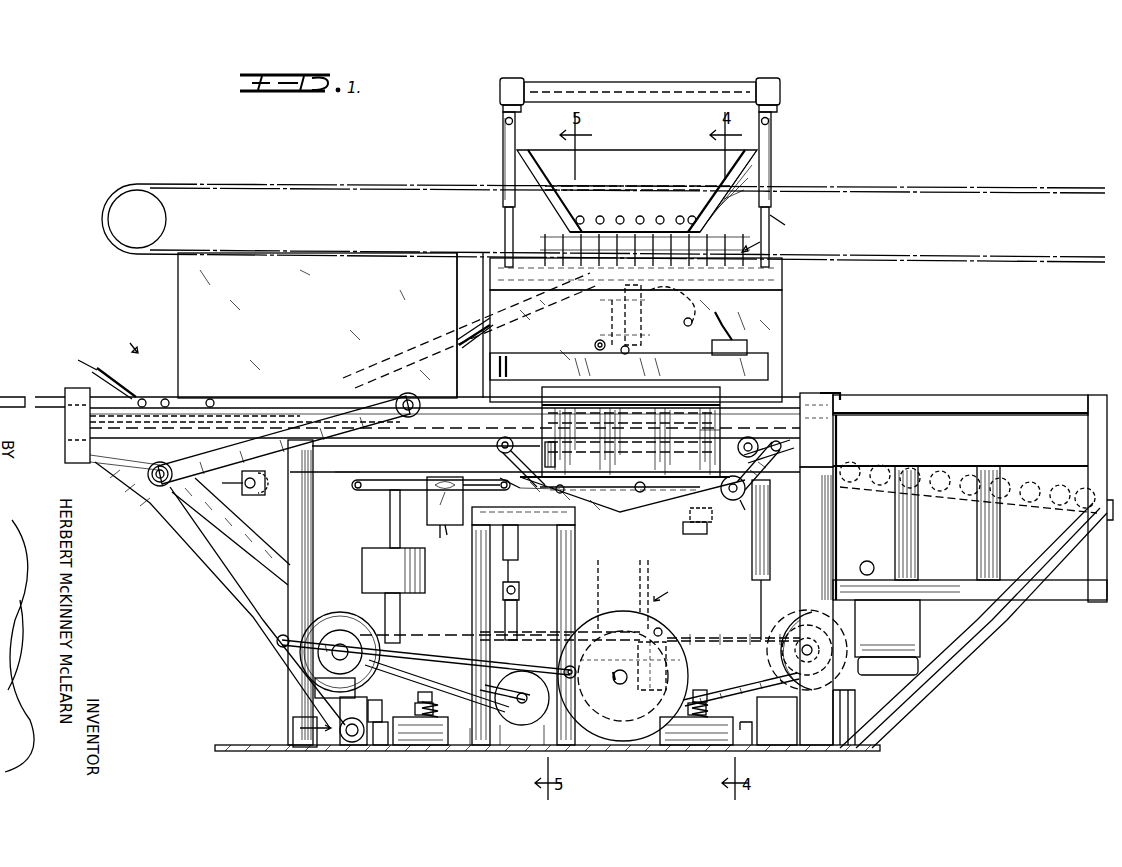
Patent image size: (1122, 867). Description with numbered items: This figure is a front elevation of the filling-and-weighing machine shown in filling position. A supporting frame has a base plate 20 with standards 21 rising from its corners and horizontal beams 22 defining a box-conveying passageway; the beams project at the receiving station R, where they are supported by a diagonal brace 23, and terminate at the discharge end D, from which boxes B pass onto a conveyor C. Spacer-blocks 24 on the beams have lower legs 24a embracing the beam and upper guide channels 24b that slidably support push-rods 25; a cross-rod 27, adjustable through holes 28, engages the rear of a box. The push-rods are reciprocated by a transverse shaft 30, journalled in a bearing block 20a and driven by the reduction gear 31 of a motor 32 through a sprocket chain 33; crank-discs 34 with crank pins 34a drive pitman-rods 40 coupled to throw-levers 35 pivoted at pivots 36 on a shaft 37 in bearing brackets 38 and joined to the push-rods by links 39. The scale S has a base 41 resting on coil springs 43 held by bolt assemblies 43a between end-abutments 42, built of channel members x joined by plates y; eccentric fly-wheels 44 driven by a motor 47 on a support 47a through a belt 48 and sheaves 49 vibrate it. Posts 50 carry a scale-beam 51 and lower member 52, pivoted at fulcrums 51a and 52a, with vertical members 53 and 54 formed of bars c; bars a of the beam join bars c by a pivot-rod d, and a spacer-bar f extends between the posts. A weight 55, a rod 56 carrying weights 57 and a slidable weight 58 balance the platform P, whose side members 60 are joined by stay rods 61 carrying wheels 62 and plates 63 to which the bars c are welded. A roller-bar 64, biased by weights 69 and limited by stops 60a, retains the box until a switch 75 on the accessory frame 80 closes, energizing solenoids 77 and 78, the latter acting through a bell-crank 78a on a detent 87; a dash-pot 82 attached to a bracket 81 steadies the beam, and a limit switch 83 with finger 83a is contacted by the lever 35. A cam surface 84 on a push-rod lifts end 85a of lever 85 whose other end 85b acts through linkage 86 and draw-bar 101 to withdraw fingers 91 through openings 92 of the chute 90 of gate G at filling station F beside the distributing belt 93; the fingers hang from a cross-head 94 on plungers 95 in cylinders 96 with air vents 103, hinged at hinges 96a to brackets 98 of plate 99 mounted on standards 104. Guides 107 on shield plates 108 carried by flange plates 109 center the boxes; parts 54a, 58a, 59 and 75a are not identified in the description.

The base plate 20 is at (330, 751).
The bearing block 20a is at (668, 745).
The standards 21 is at (290, 515).
The horizontal beams 22 is at (425, 472).
The diagonal brace member 23 is at (137, 503).
The spacer-block 24 is at (65, 412).
The lower walls or legs 24a is at (92, 440).
The guide channel 24b is at (72, 392).
The push-rods 25 is at (152, 397).
The cross-rod 27 is at (166, 399).
The holes 28 is at (142, 399).
The shaft 30 is at (627, 674).
The reduction gear assembly 31 is at (795, 640).
The motor 32 is at (887, 637).
The sprocket chain 33 is at (735, 690).
The crank-disc 34 is at (680, 668).
The crank pins 34a is at (590, 670).
The throw-lever 35 is at (250, 615).
The pivot 36 is at (366, 745).
The shaft 37 is at (352, 742).
The bearing brackets 38 is at (380, 712).
The pivoted link 39 is at (214, 477).
The pitman-rod 40 is at (436, 657).
The scale base 41 is at (450, 745).
The end-abutments 42 is at (385, 745).
The coil compression springs 43 is at (428, 718).
The hold-down bolt-nut assembly 43a is at (410, 680).
The eccentric fly-wheels 44 is at (524, 725).
The motor 47 is at (332, 612).
The motor support 47a is at (315, 686).
The belt 48 is at (480, 702).
The sheaves 49 is at (495, 690).
The posts 50 is at (575, 590).
The scale-beam 51 is at (460, 478).
The fulcrum 51a is at (561, 493).
The lower horizontal member 52 is at (528, 632).
The pivot 52a is at (565, 628).
The vertical member 53 is at (390, 530).
The vertical stabilizing member 54 is at (635, 600).
The pin 54a is at (660, 628).
The weight 55 is at (362, 558).
The horizontal rod 56 is at (250, 490).
The additional weights 57 is at (236, 489).
The slidable weight 58 is at (437, 537).
The housing 58a is at (445, 501).
The rod 59 is at (375, 480).
The side members 60 is at (502, 470).
The stops 60a is at (780, 488).
The stay rods 61 is at (548, 456).
The wheels 62 is at (508, 438).
The horizontal plate 63 is at (646, 487).
The roller-bar 64 is at (816, 430).
The weight member 69 is at (744, 513).
The electric switch 75 is at (710, 507).
The stop 75a is at (693, 534).
The solenoid 77 is at (688, 640).
The solenoid 78 is at (780, 326).
The bell-crank lever 78a is at (725, 318).
The accessory supporting frame 80 is at (478, 530).
The bracket 81 is at (516, 590).
The dash-pot 82 is at (518, 547).
The limit switch 83 is at (300, 735).
The actuating finger 83a is at (300, 712).
The inclined cam surface 84 is at (105, 368).
The lever 85 is at (470, 330).
The free end 85a is at (365, 371).
The other end 85b is at (598, 340).
The bell-crank lever 86 is at (622, 345).
The spring-pressed detent 87 is at (690, 300).
The chute 90 is at (605, 186).
The fingers 91 is at (545, 252).
The openings 92 is at (640, 216).
The distributing belt 93 is at (868, 190).
The cross-head 94 is at (492, 278).
The plungers 95 is at (505, 228).
The cylinders 96 is at (503, 150).
The hinge 96a is at (522, 92).
The brackets 98 is at (503, 165).
The plate member 99 is at (787, 212).
The draw-bar 101 is at (637, 315).
The air vents 103 is at (504, 121).
The vertical standards 104 is at (472, 613).
The guides 107 is at (629, 367).
The shield plates 108 is at (625, 432).
The flange plate 109 is at (580, 486).
The box B is at (176, 285).
The conveyor C is at (896, 463).
The discharge end D is at (845, 441).
The filling station F is at (762, 241).
The gate mechanism G is at (662, 178).
The weighing platform P is at (720, 428).
The box receiving station R is at (128, 334).
The scale S is at (667, 592).
The horizontal bars a is at (337, 472).
The bars c is at (650, 572).
The pivot-rod d is at (642, 482).
The spacer-bar f is at (545, 640).
The channel members x is at (474, 745).
The plates y is at (414, 704).